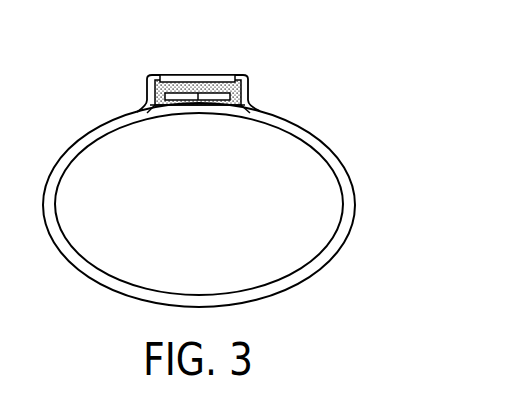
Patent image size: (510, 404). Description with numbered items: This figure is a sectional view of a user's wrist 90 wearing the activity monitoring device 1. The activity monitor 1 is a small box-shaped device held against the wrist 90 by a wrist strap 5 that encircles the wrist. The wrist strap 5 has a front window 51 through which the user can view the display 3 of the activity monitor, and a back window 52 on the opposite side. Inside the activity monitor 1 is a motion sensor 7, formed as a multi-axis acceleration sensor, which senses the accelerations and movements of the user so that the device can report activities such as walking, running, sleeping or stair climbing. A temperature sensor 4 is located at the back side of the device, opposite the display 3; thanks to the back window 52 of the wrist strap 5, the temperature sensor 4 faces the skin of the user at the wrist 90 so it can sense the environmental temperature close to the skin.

The activity monitoring device 1 is at (253, 80).
The display 3 is at (200, 86).
The temperature sensor 4 is at (199, 98).
The wrist strap 5 is at (88, 137).
The motion sensor 7 is at (160, 90).
The front window 51 is at (188, 78).
The back window 52 is at (163, 108).
The wrist 90 is at (283, 163).